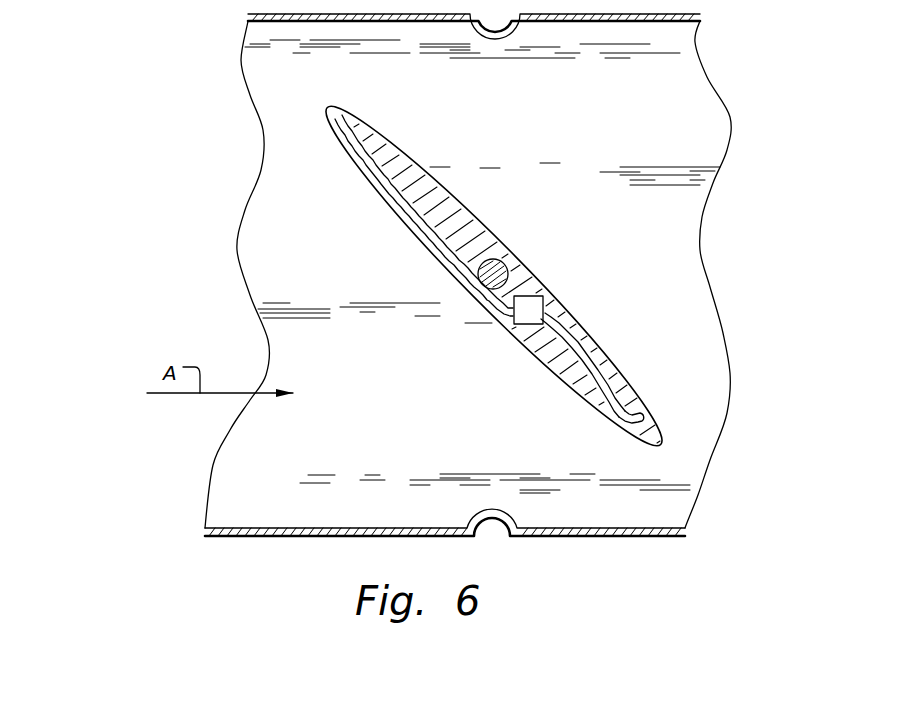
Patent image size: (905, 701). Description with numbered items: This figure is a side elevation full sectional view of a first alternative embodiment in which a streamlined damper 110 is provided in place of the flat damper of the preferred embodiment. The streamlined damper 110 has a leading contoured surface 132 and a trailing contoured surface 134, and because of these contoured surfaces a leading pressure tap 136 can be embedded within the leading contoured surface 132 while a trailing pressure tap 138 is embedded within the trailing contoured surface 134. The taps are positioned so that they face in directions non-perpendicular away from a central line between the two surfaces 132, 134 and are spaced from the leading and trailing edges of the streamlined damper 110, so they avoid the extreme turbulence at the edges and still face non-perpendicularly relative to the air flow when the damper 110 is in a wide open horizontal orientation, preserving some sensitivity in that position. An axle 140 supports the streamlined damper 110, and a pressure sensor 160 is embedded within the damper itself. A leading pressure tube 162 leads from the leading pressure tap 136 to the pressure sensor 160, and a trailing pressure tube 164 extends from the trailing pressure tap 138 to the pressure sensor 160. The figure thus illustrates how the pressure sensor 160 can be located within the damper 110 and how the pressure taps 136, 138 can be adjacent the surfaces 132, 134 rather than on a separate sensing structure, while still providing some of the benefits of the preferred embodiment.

The streamlined damper 110 is at (156, 82).
The leading pressure tap 136 is at (337, 128).
The leading contoured surface 132 is at (350, 161).
The leading pressure tube 162 is at (432, 238).
The axle 140 is at (507, 261).
The pressure sensor 160 is at (534, 297).
The trailing pressure tube 164 is at (576, 313).
The trailing pressure tap 138 is at (648, 416).
The trailing contoured surface 134 is at (627, 380).